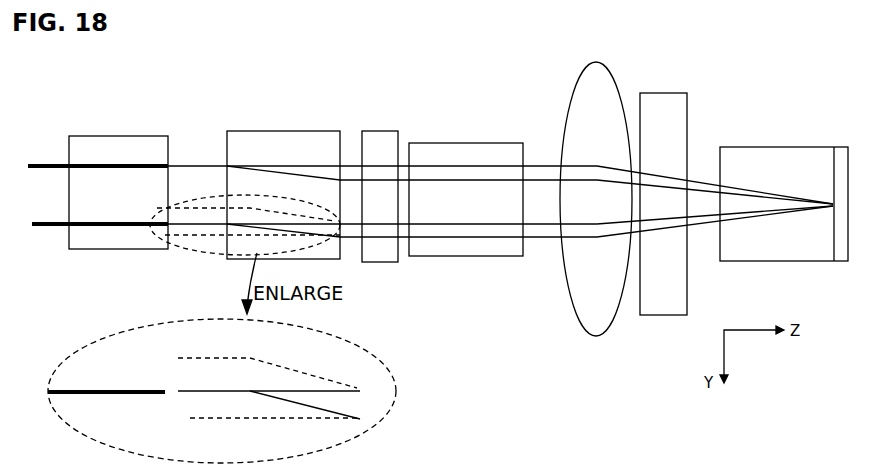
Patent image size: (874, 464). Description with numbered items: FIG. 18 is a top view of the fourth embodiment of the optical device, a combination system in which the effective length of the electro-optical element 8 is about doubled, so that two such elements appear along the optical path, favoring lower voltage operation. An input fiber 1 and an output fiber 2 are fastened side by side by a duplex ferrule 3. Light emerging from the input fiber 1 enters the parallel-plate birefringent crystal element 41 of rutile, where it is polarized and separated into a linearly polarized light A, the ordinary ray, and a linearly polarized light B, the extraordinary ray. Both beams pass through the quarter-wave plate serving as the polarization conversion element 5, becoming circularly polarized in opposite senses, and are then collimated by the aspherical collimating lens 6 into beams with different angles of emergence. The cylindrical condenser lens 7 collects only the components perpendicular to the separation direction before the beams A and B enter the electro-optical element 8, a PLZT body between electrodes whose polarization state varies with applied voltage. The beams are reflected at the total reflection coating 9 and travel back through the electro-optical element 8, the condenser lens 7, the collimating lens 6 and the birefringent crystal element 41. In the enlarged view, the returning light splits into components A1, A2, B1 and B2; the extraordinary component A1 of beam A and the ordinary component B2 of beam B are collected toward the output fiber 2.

The input fiber 1 is at (430, 173).
The output fiber 2 is at (432, 218).
The duplex ferrule 3 is at (118, 180).
The parallel-plate birefringent crystal element 41 is at (283, 182).
The polarization conversion element 5 is at (380, 216).
The collimating lens 6 is at (596, 186).
The condenser lens 7 is at (663, 189).
The electro-optical element 8 is at (628, 190).
The total reflection coating 9 is at (831, 224).
The linearly polarized light A is at (424, 204).
The linearly polarized light B is at (421, 201).
The extraordinary ray component in light beam A A1 is at (305, 405).
The ray A2 is at (275, 426).
The ray B1 is at (267, 371).
The ordinary ray component in light beam B B2 is at (284, 385).